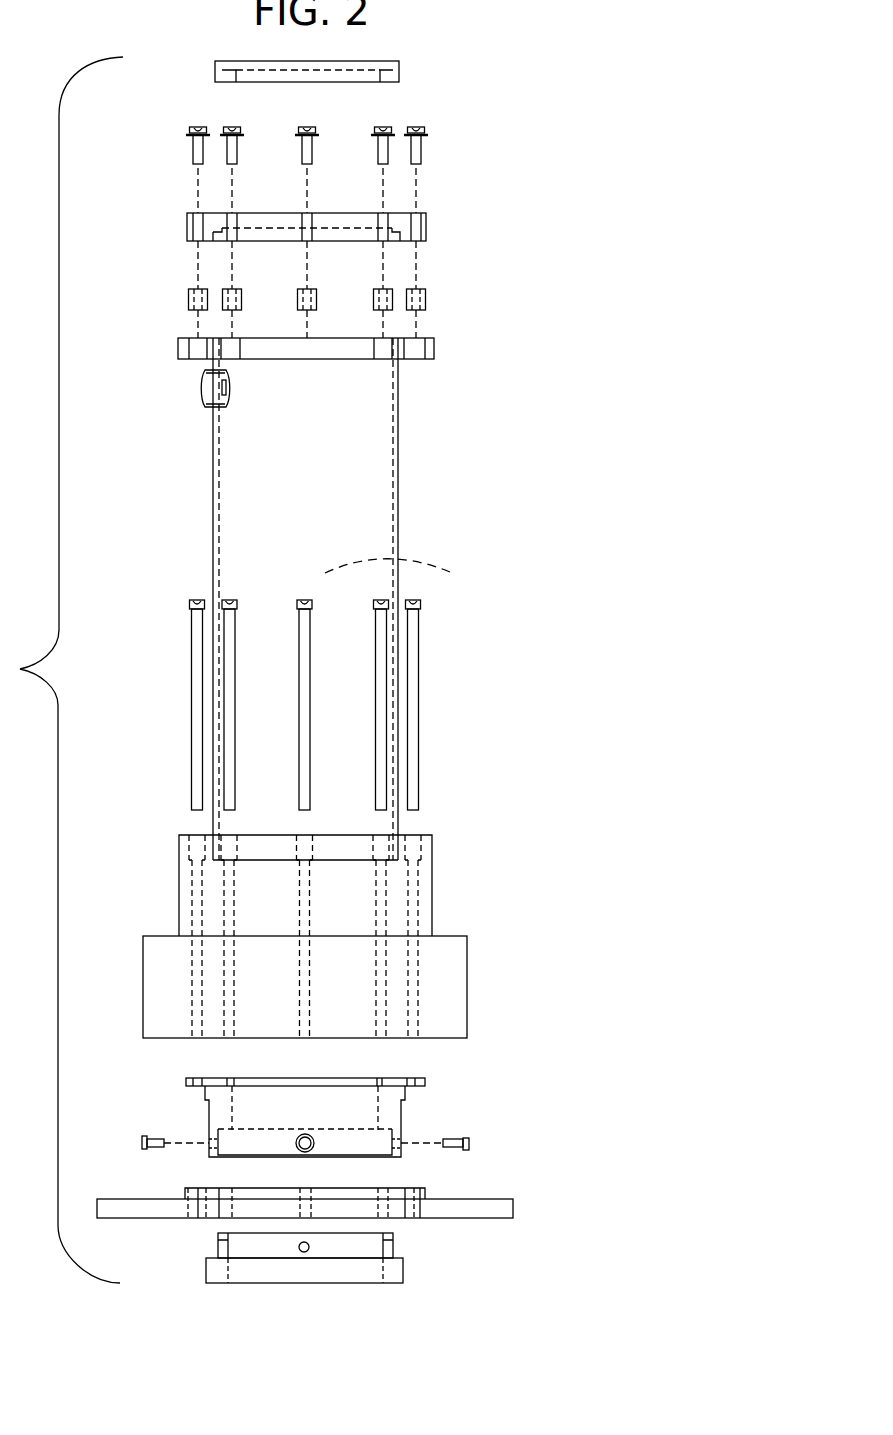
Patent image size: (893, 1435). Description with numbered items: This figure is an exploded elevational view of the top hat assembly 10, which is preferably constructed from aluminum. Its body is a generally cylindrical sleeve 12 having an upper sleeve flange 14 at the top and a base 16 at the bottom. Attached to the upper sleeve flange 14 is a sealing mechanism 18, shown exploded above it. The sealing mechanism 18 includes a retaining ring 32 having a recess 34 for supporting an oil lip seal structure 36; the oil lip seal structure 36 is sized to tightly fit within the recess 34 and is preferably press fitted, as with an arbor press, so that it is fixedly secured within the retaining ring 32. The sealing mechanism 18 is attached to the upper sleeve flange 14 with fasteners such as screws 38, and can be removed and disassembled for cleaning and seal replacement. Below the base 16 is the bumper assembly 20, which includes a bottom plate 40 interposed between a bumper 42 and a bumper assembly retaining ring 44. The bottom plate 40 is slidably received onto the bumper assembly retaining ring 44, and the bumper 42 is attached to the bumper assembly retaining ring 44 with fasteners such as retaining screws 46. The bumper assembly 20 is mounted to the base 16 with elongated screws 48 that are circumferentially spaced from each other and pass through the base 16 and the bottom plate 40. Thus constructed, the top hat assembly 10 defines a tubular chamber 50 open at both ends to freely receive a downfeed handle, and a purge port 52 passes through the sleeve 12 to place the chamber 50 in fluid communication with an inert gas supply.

The top hat assembly 10 is at (446, 464).
The sleeve 12 is at (372, 508).
The upper sleeve flange 14 is at (434, 347).
The base 16 is at (450, 992).
The sealing mechanism 18 is at (472, 150).
The bumper assembly 20 is at (551, 1141).
The retaining ring 32 is at (426, 229).
The recess 34 is at (265, 222).
The oil lip seal structure 36 is at (399, 72).
The screws 38 is at (195, 144).
The bottom plate 40 is at (484, 1206).
The bumper 42 is at (393, 1245).
The bumper assembly retaining ring 44 is at (401, 1115).
The retaining screws 46 is at (142, 1143).
The elongated screws 48 is at (191, 726).
The tubular chamber 50 is at (404, 572).
The purge port 52 is at (202, 387).